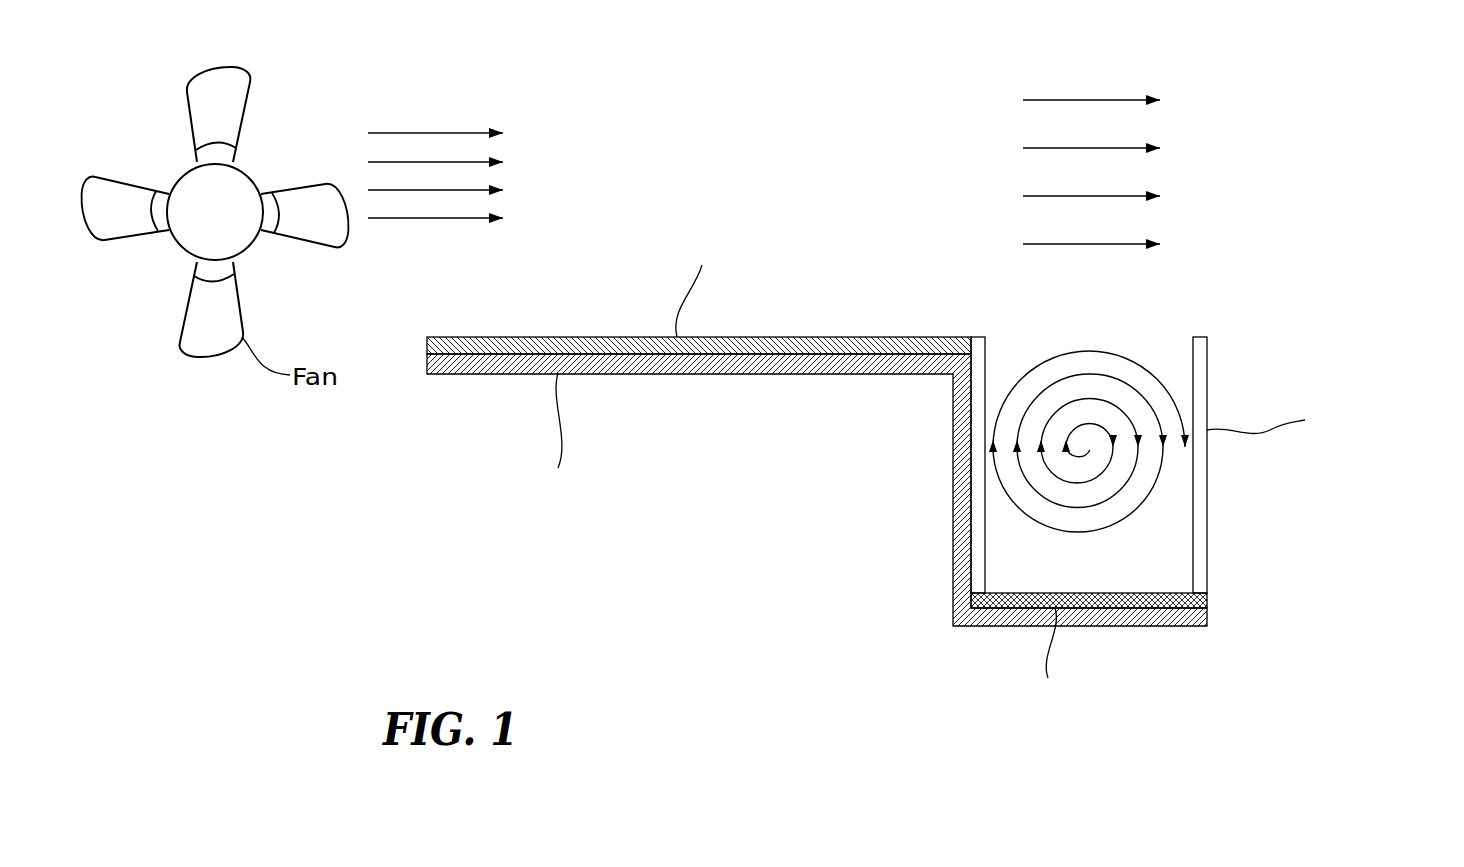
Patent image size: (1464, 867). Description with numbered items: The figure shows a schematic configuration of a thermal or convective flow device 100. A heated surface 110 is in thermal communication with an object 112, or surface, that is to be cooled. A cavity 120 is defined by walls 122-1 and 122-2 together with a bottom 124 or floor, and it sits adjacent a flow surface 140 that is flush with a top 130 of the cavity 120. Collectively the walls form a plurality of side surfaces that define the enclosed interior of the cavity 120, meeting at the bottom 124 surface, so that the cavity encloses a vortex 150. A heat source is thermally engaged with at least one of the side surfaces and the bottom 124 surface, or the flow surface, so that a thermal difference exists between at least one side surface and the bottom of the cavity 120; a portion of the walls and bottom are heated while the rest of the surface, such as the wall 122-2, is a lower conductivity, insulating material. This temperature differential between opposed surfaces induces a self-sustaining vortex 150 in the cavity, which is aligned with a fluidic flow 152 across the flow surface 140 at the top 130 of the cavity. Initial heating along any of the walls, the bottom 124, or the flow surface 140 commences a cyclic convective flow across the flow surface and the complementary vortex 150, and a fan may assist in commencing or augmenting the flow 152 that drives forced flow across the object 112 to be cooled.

The thermal or convective flow device 100 is at (1220, 72).
The heated surface 110 is at (952, 430).
The object to be cooled 112 is at (842, 337).
The cavity 120 is at (1045, 575).
The wall 122-1 is at (985, 353).
The wall 122-2 is at (1192, 353).
The bottom 124 is at (1173, 593).
The top 130 is at (1220, 318).
The flow surface 140 is at (515, 298).
The vortex 150 is at (1163, 478).
The fluidic flow 152 is at (1000, 93).